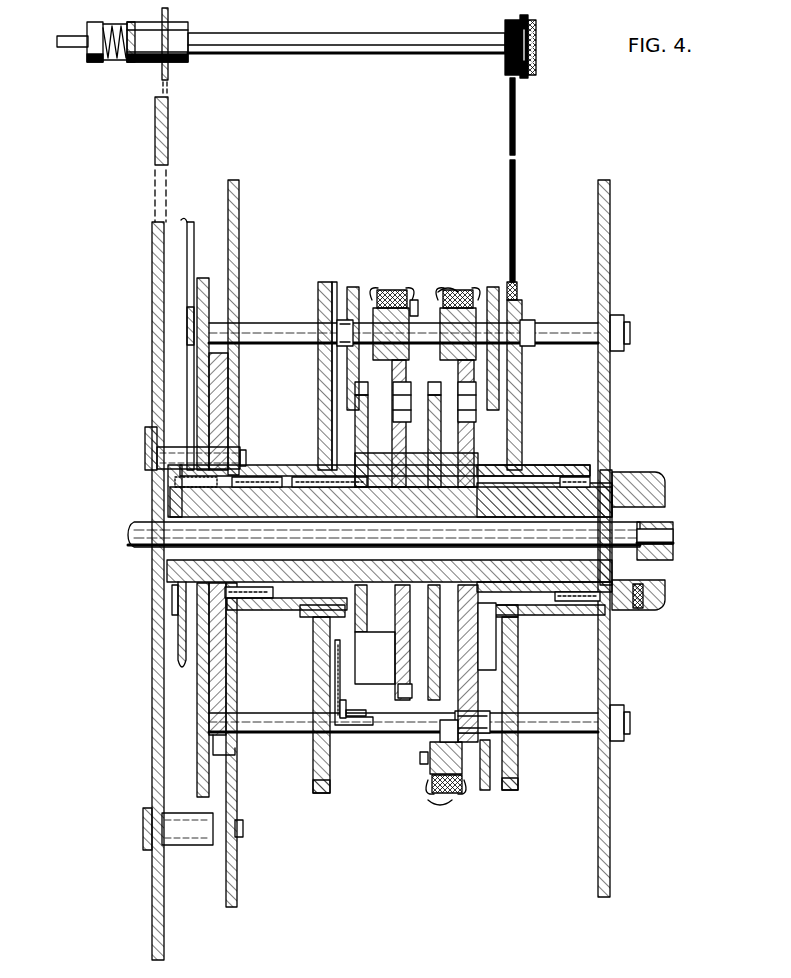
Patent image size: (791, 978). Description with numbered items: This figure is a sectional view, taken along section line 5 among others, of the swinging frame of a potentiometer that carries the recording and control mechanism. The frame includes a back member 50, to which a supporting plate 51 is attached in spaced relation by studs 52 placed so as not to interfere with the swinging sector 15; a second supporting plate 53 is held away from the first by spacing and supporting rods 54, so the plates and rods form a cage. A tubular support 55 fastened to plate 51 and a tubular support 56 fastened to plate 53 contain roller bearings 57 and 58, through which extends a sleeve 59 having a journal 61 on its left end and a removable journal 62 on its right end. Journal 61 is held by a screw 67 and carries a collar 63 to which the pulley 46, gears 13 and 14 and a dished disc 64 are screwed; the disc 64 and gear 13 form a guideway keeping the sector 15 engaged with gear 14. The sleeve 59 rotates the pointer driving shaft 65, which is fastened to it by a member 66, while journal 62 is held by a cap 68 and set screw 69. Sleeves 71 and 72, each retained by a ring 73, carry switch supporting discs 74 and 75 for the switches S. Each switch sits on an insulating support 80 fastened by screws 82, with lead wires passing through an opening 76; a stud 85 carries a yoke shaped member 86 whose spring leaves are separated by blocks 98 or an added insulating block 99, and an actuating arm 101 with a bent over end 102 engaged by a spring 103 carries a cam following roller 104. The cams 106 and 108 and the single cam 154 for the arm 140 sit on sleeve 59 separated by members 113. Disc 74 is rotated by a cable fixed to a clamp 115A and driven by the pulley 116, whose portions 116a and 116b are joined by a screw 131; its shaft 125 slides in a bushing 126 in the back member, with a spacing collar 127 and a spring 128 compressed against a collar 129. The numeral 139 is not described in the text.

The shaft 125 is at (68, 38).
The spring 128 is at (114, 22).
The collar 129 is at (94, 63).
The bushing 126 is at (150, 63).
The spacing collar 127 is at (314, 33).
The pulley portion 116a is at (504, 30).
The pulley 116 is at (540, 35).
The screw 131 is at (536, 42).
The pulley portion 116b is at (534, 59).
The back member 50 is at (154, 128).
The supporting plate 51 is at (240, 202).
The gear 13 is at (208, 278).
The sector 15 is at (182, 224).
The second supporting plate 53 is at (610, 231).
The spacing and supporting rods 54 is at (276, 324).
The pointer driving shaft 65 is at (134, 530).
The member 66 is at (671, 530).
The cap 68 is at (660, 490).
The set screw 69 is at (636, 608).
The sleeve 59 is at (618, 480).
The screw 67 is at (306, 470).
The roller bearing 57 is at (272, 472).
The roller bearing 58 is at (576, 474).
The tubular support 56 is at (596, 464).
The tubular support 55 is at (252, 463).
The studs 52 is at (246, 446).
The clamp 115A is at (320, 282).
The support 80 is at (344, 286).
The bent over end 102 is at (338, 317).
The spring 103 is at (406, 316).
The insulating block 99 is at (438, 289).
The blocks 98 is at (378, 289).
The yoke shaped member 86 is at (416, 302).
The switch S is at (388, 292).
The section line 5- 5 is at (425, 250).
The actuating arm 101 is at (340, 358).
The stud 85 is at (348, 341).
The cam following roller 104 is at (498, 396).
The opening 76 is at (352, 401).
The screws 82 is at (348, 416).
The journal 61 is at (284, 586).
The sleeve 71 is at (298, 610).
The journal 62 is at (530, 600).
The sleeve 72 is at (570, 616).
The retaining ring 73 is at (318, 648).
The switch supporting disc 74 is at (313, 776).
The switch supporting disc 75 is at (518, 779).
The collar 63 is at (237, 637).
The gear 14 is at (178, 638).
The dished disc 64 is at (180, 637).
The bracket 139 is at (360, 738).
The arm 140 is at (344, 687).
The single cam 154 is at (358, 697).
The separator members 113 is at (394, 626).
The cam 108 is at (354, 677).
The cam 106 is at (402, 688).
The pulley 46 is at (235, 754).